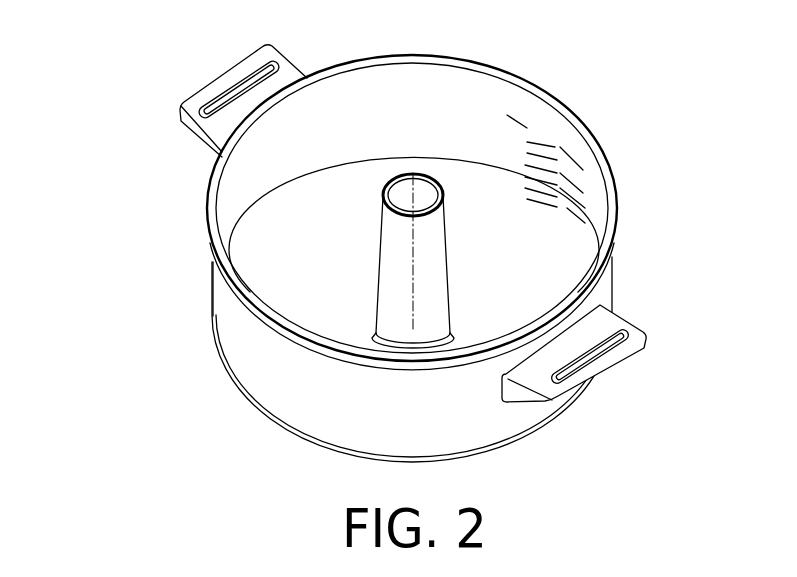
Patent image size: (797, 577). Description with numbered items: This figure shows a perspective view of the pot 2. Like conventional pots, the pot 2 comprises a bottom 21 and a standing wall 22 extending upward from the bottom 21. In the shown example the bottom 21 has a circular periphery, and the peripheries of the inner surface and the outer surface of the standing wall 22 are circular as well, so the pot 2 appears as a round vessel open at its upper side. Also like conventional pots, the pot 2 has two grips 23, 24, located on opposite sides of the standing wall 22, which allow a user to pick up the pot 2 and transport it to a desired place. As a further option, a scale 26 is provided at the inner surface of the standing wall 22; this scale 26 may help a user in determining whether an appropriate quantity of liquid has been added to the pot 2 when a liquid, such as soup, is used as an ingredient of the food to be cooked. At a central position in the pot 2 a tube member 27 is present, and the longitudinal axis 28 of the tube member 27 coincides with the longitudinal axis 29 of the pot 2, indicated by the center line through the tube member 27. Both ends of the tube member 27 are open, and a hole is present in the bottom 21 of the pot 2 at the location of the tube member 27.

The pot 2 is at (357, 88).
The bottom 21 is at (563, 417).
The standing wall 22 is at (226, 310).
The grip 23 is at (212, 88).
The grip 24 is at (637, 328).
The scale 26 is at (575, 158).
The tube member 27 is at (437, 290).
The longitudinal axis of the tube member 28 is at (418, 177).
The longitudinal axis of the pot 29 is at (418, 177).